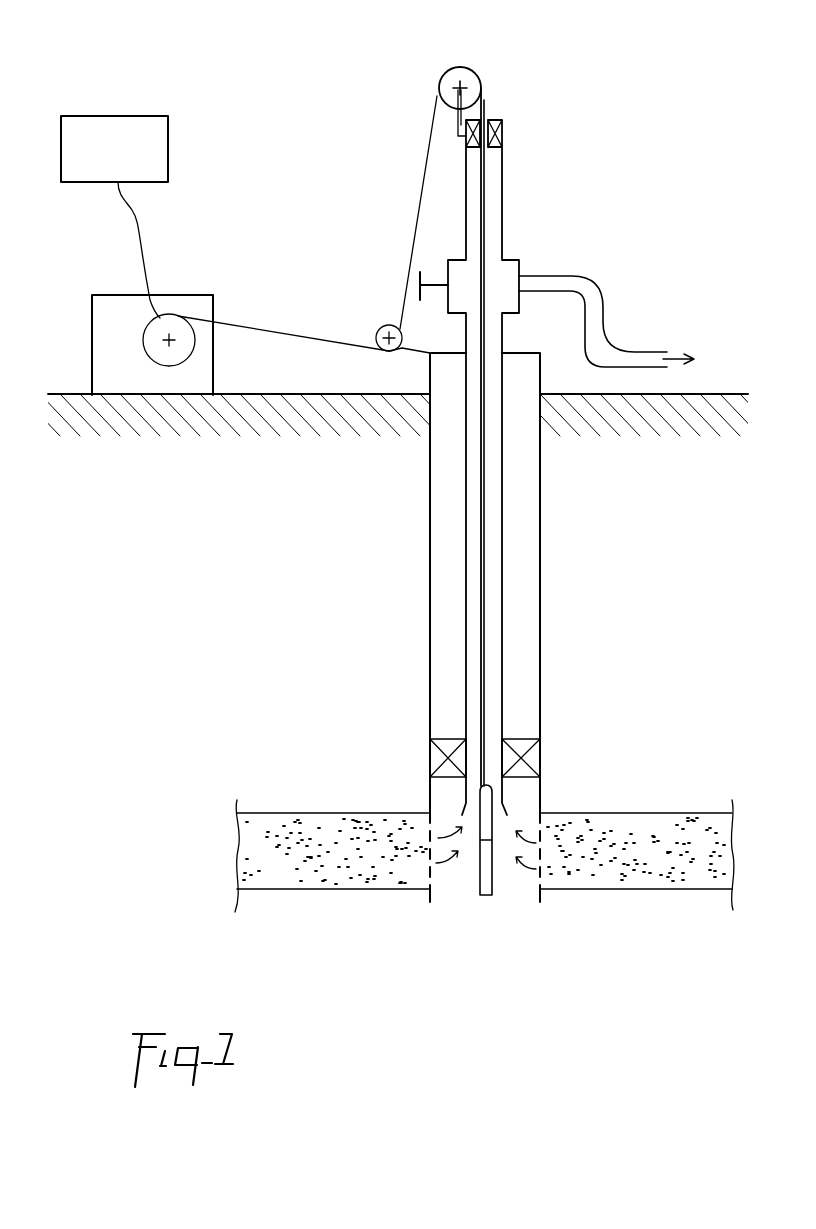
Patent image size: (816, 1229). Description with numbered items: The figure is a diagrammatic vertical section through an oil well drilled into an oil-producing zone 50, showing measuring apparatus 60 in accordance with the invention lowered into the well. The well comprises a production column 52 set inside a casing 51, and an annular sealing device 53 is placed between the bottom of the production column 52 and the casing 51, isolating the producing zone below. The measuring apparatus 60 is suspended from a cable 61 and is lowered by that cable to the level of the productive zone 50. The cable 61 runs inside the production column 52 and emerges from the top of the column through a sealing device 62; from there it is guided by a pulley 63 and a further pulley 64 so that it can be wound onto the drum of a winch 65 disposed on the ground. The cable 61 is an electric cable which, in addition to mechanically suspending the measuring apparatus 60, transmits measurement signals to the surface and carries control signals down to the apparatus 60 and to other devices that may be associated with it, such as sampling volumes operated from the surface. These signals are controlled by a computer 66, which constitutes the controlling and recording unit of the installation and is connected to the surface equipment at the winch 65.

The oil-producing zone 50 is at (308, 822).
The casing 51 is at (541, 626).
The production column 52 is at (503, 566).
The annular sealing device 53 is at (530, 756).
The measuring apparatus 60 is at (484, 880).
The cable 61 is at (484, 522).
The sealing device 62 is at (503, 133).
The pulley 63 is at (467, 77).
The pulley 64 is at (389, 326).
The winch 65 is at (102, 296).
The computer 66 is at (90, 126).